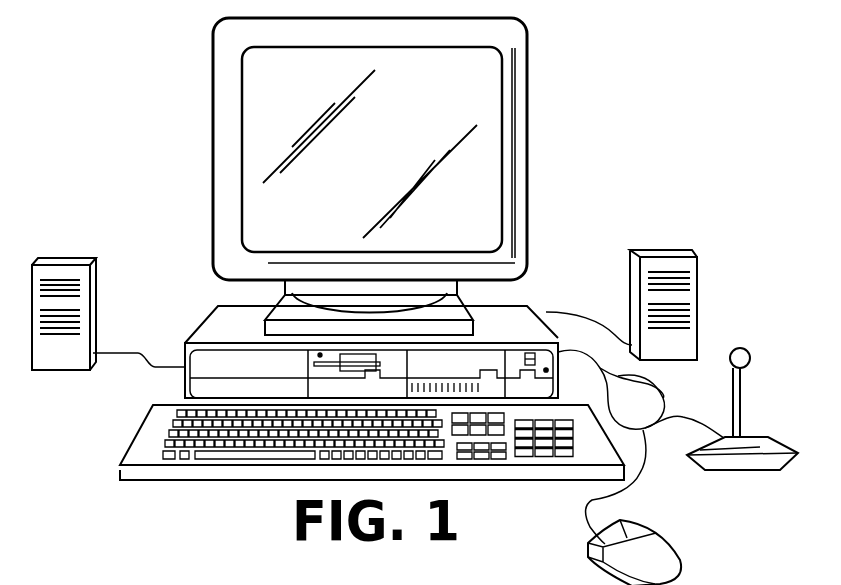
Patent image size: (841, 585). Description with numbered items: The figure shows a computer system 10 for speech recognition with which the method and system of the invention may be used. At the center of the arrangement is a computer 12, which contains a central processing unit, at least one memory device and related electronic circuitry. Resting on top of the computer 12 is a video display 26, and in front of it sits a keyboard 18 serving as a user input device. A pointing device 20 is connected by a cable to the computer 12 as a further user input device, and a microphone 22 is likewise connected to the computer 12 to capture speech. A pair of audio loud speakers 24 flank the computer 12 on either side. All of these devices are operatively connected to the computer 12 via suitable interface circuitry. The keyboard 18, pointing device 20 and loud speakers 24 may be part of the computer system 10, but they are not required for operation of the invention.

The computer system 10 is at (556, 203).
The computer 12 is at (195, 342).
The keyboard 18 is at (148, 430).
The pointing device 20 is at (600, 548).
The microphone 22 is at (722, 470).
The audio loud speakers 24 is at (58, 258).
The video display 26 is at (213, 55).